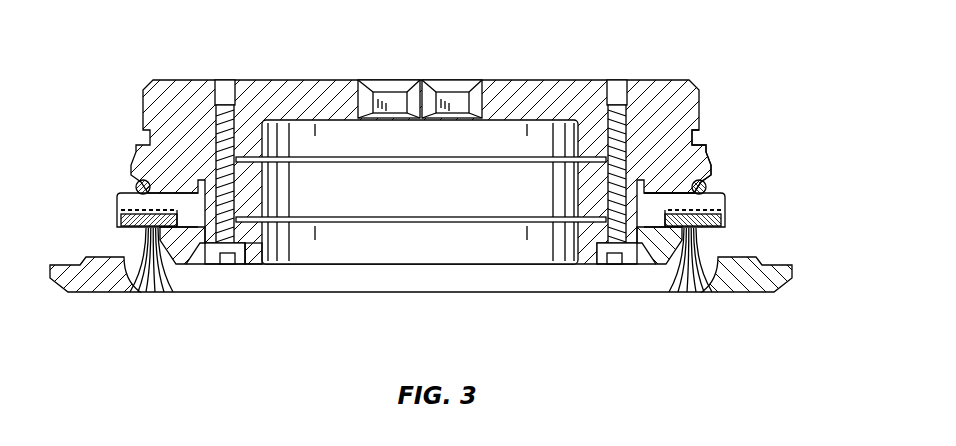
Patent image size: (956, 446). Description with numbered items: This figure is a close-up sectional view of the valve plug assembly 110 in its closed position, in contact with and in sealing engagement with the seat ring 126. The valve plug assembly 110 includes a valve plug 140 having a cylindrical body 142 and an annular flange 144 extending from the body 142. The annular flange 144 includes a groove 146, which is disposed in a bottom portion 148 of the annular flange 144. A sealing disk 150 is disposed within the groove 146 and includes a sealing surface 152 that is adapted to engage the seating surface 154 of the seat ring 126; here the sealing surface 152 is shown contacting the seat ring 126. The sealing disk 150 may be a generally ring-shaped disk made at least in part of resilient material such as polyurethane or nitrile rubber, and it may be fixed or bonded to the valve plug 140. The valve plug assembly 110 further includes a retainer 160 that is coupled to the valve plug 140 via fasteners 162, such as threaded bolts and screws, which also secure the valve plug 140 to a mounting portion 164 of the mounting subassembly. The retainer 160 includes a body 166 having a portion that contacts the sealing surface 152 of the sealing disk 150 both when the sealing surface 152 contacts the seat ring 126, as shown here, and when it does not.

The valve plug assembly 110 is at (432, 194).
The seat ring 126 is at (96, 282).
The valve plug 140 is at (680, 80).
The cylindrical body 142 is at (597, 158).
The annular flange 144 is at (718, 193).
The groove 146 is at (724, 210).
The bottom portion 148 is at (652, 168).
The sealing disk 150 is at (724, 222).
The sealing surface 152 is at (675, 264).
The seating surface 154 is at (717, 264).
The retainer 160 is at (194, 264).
The fasteners 162 is at (241, 103).
The mounting portion 164 is at (190, 90).
The body 166 is at (254, 264).